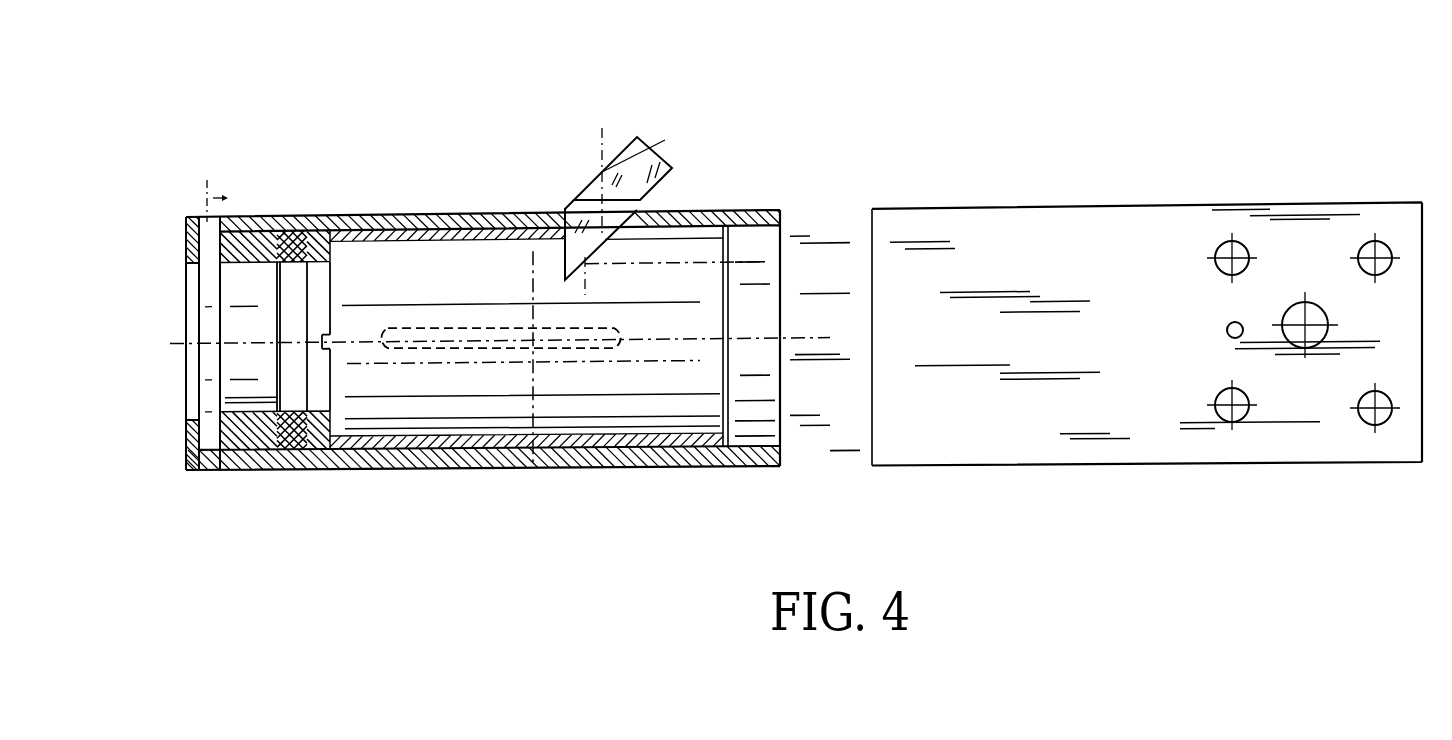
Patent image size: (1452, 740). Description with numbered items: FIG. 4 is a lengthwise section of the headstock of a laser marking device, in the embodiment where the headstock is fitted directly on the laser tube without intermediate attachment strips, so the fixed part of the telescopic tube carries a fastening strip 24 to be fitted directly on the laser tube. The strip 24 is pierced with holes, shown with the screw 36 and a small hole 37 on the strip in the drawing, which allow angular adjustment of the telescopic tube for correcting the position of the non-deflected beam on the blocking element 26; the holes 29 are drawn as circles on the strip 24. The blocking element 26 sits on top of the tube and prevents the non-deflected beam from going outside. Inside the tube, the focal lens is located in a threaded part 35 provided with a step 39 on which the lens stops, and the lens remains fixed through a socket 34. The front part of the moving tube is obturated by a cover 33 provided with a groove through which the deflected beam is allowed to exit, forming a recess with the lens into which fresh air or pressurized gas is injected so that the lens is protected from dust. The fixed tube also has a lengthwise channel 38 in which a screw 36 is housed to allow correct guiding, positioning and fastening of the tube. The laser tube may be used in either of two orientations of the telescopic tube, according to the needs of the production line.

The fastening strip 24 is at (1046, 222).
The blocking element 26 is at (638, 135).
The mounting holes 29 is at (1234, 242).
The cover 33 is at (185, 215).
The socket 34 is at (318, 285).
The threaded part 35 is at (237, 215).
The screw 36 is at (1309, 303).
The pin hole 37 is at (1231, 338).
The lengthwise channel 38 is at (475, 347).
The step 39 is at (293, 382).